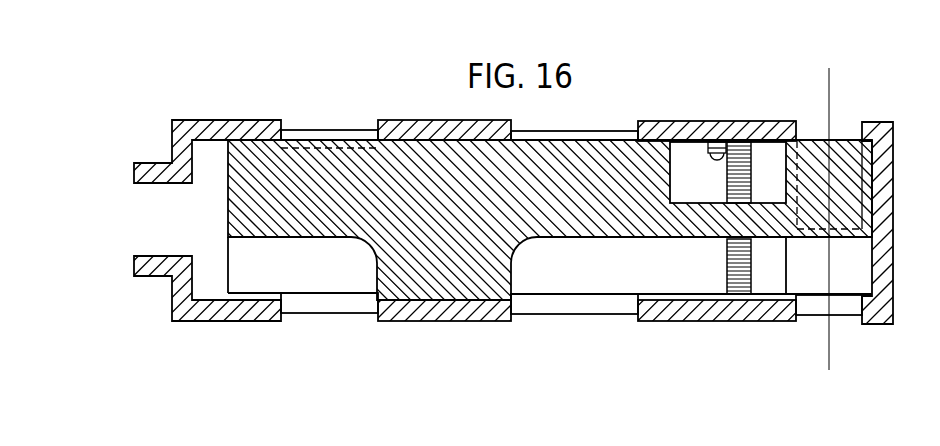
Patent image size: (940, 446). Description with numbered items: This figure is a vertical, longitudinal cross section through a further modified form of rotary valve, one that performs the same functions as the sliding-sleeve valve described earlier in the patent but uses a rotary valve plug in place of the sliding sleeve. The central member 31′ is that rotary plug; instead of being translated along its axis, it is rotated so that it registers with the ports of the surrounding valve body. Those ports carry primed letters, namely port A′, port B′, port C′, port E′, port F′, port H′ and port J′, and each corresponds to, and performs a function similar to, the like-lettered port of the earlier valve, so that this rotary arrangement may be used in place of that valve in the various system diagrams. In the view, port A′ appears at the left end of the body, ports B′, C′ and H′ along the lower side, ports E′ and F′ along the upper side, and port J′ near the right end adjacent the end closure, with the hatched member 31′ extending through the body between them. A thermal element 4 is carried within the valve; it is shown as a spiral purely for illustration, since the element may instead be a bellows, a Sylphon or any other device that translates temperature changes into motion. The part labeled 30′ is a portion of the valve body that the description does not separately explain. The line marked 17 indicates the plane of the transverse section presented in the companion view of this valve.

The port A′ is at (148, 213).
The port B′ is at (317, 302).
The port C′ is at (579, 301).
The port E′ is at (585, 135).
The port F′ is at (338, 135).
The port H′ is at (843, 303).
The port J′ is at (851, 139).
The housing block 30′ is at (483, 127).
The rotary valve plug member 31′ is at (431, 270).
The thermal element 4 is at (728, 218).
The section line 17- 17 is at (852, 68).